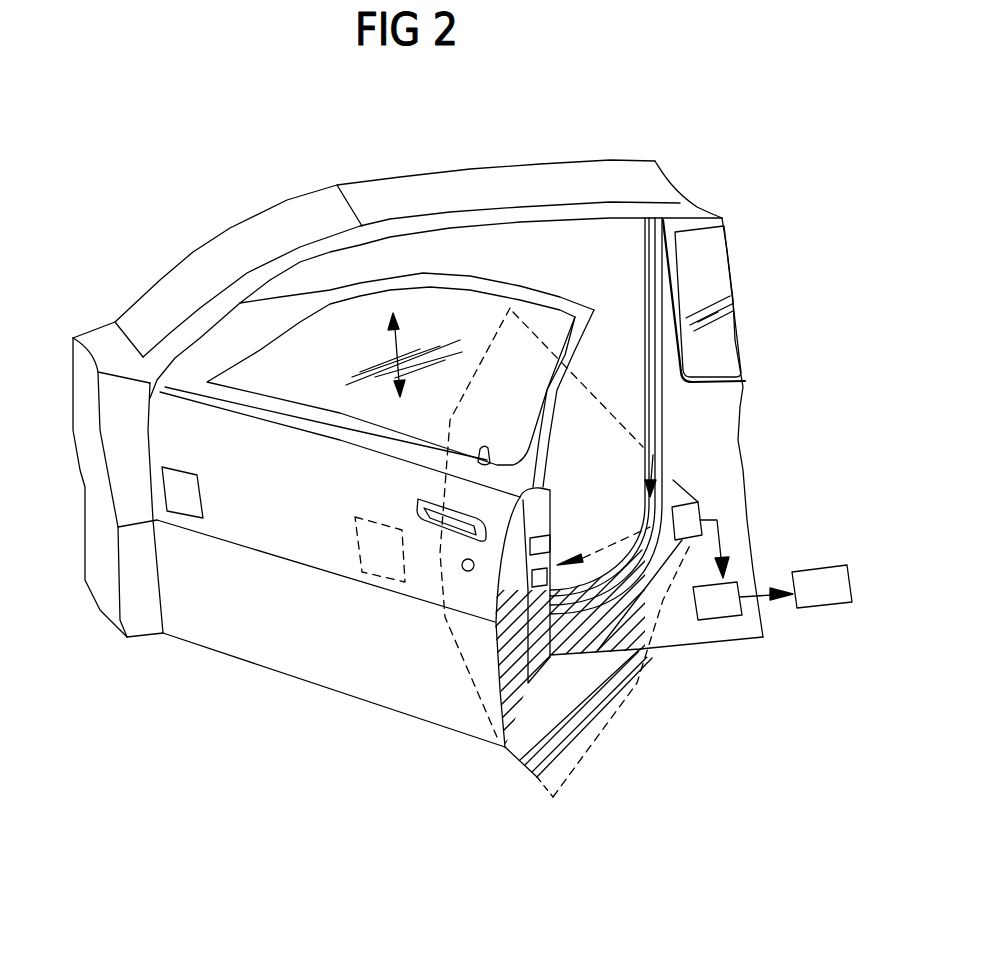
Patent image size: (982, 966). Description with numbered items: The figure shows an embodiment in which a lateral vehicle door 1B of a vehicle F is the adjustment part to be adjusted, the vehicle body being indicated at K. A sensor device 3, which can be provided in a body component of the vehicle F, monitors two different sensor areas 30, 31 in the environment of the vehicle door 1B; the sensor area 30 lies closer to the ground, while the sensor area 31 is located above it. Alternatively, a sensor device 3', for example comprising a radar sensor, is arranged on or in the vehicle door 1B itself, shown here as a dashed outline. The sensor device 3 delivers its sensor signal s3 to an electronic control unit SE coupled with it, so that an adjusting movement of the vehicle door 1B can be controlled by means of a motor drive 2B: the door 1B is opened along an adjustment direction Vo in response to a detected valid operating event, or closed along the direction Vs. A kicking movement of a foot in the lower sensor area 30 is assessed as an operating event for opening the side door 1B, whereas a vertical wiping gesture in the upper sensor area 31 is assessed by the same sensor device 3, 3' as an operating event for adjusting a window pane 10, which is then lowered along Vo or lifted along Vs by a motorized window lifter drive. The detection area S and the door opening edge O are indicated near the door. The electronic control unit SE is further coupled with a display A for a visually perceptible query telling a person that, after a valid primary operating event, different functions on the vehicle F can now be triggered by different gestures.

The motor vehicle body K is at (660, 181).
The window pane 10 is at (272, 357).
The lateral vehicle door 1B is at (437, 710).
The motor drive 2B is at (187, 493).
The sensor device 3 is at (728, 512).
The sensor device 3' is at (361, 534).
The sensor area 31 is at (577, 423).
The sensor area 30 is at (570, 743).
The detection area S is at (595, 645).
The electronic control unit SE is at (717, 605).
The display A is at (817, 597).
The sensor signal s3 is at (723, 547).
The vehicle F is at (740, 508).
The door opening edge O is at (642, 412).
The adjustment direction Vs is at (504, 403).
The adjustment direction Vo is at (498, 452).